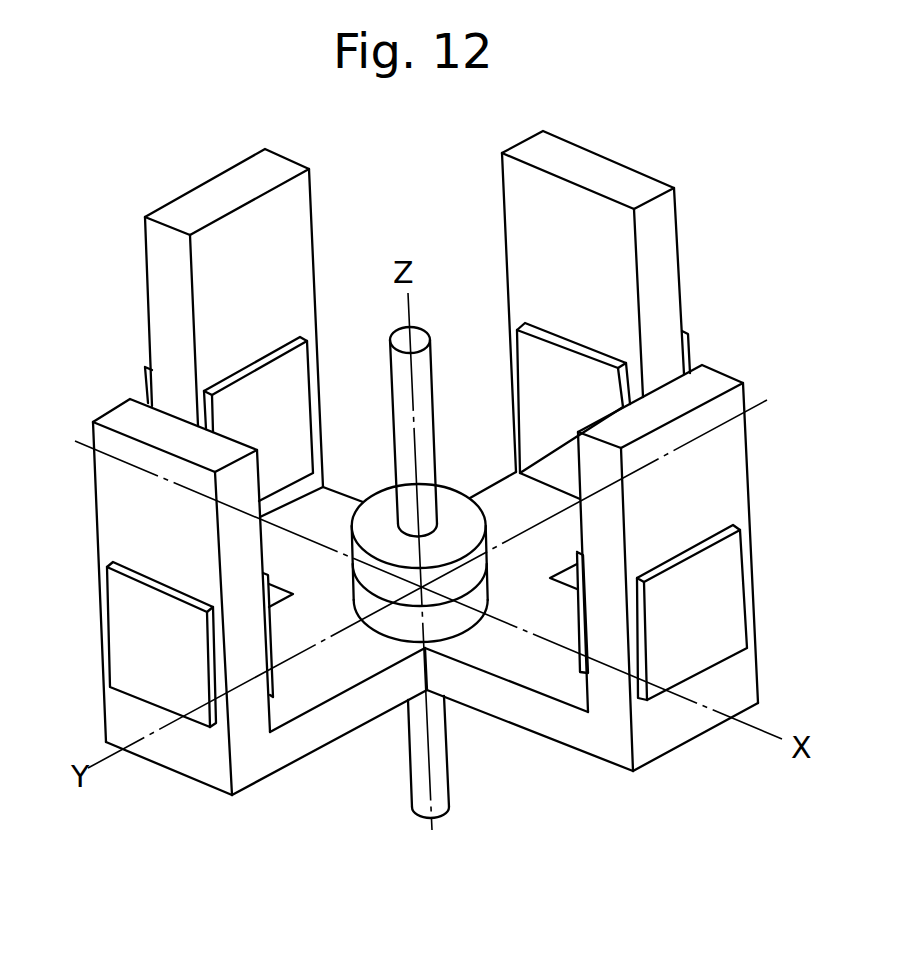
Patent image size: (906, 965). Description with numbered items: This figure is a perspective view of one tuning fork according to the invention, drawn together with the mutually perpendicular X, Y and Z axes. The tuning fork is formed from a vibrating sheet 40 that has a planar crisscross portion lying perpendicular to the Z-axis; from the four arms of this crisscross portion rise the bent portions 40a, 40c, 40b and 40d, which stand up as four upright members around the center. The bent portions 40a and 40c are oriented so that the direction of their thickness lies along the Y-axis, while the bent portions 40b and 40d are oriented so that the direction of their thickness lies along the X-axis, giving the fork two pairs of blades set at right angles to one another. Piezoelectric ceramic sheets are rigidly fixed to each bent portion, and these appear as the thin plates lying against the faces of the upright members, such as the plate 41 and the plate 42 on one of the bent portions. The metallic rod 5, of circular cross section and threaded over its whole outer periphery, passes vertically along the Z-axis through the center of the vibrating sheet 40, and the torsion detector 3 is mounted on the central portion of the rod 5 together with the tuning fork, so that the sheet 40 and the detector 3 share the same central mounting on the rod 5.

The vibrating sheet 40 is at (187, 783).
The bent portion 40a is at (107, 523).
The bent portion 40b is at (727, 502).
The bent portion 40c is at (662, 252).
The bent portion 40d is at (302, 240).
The plate (electrode/magnet plate on inner face) 41 is at (293, 395).
The plate (on outer face) 42 is at (143, 381).
The torsion detector 3 is at (380, 488).
The metallic rod 5 is at (432, 385).